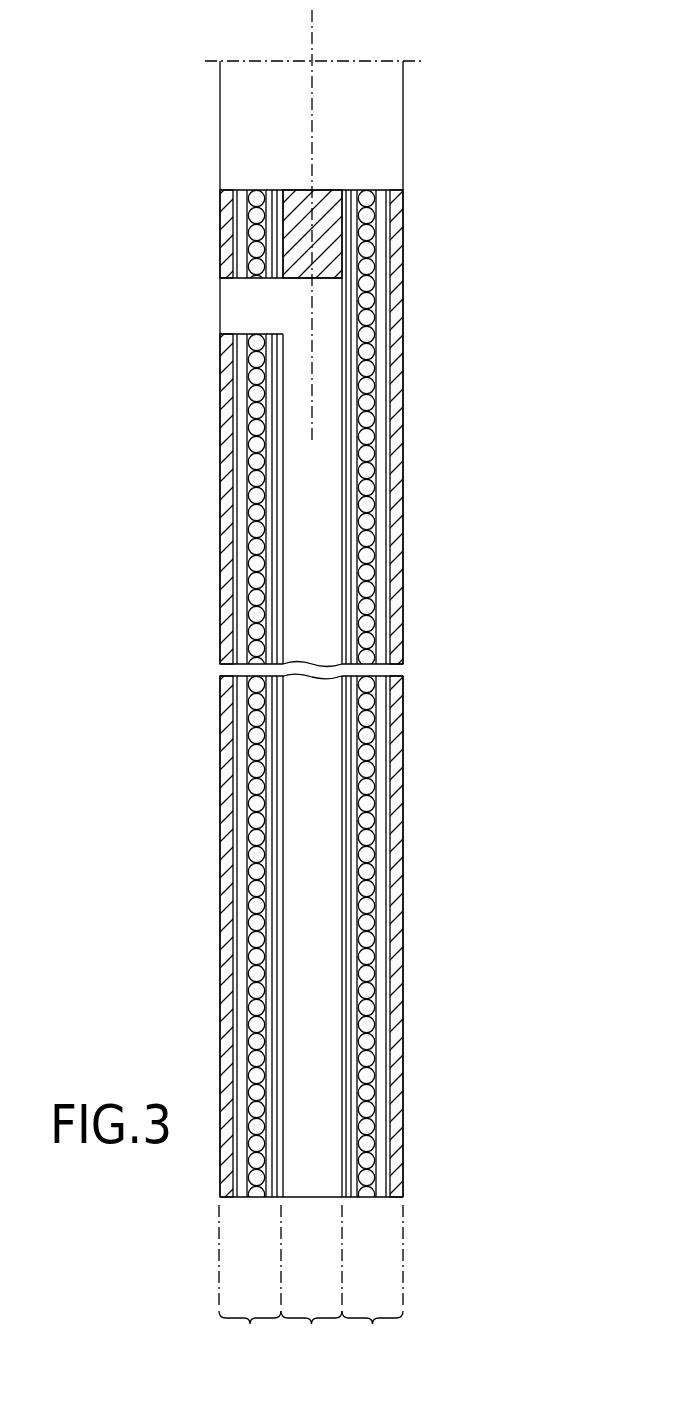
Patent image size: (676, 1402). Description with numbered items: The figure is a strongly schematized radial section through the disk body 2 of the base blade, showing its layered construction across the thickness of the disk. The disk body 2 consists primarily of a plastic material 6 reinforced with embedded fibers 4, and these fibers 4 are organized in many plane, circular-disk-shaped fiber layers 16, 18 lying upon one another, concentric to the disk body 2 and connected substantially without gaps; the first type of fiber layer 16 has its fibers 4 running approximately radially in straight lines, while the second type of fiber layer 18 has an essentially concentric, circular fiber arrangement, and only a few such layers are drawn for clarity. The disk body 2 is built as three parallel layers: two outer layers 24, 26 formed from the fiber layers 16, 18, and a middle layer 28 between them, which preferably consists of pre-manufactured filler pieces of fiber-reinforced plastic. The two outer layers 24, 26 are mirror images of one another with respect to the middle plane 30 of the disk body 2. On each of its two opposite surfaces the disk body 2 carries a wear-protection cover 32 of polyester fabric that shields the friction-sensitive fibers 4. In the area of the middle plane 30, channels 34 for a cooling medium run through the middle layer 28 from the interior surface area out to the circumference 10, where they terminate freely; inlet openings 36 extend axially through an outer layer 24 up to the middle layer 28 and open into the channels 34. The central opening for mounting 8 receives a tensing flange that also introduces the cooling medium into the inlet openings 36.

The disk body 2 is at (405, 193).
The fibers 4 is at (350, 426).
The plastic material 6 is at (373, 330).
The central opening for mounting 8 is at (258, 104).
The circumference 10 is at (382, 1198).
The first type of fiber layer 16 is at (375, 190).
The second type of fiber layer 18 is at (259, 190).
The outer layer 24 is at (250, 1284).
The outer layer 26 is at (372, 1284).
The middle layer 28 is at (311, 1284).
The middle plane 30 is at (313, 36).
The wear-protection cover 32 is at (221, 892).
The channels 34 is at (322, 752).
The inlet openings 36 is at (237, 310).